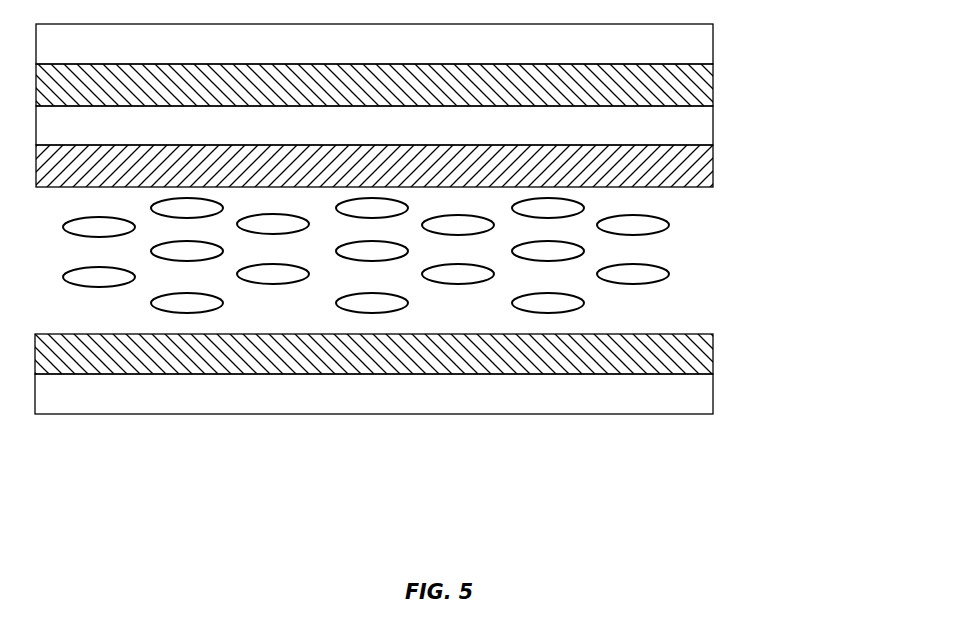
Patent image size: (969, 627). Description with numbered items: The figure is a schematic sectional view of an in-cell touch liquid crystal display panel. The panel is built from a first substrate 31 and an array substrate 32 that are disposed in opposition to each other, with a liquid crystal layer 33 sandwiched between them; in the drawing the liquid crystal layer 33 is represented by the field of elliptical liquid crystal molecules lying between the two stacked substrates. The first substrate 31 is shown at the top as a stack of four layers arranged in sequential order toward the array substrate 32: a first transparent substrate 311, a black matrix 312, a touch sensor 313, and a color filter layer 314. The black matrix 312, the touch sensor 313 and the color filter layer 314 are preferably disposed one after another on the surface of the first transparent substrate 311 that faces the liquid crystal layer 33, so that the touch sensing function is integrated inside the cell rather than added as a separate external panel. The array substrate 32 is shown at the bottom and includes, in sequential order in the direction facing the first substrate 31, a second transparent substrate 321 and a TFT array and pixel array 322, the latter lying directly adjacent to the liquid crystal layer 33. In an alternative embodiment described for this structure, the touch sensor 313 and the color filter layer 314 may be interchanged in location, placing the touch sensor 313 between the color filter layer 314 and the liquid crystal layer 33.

The first substrate 31 is at (450, 105).
The first transparent substrate 311 is at (695, 43).
The black matrix 312 is at (695, 80).
The touch sensor 313 is at (695, 125).
The color filter layer 314 is at (412, 166).
The liquid crystal layer 33 is at (708, 198).
The array substrate 32 is at (452, 374).
The TFT array and pixel array 322 is at (695, 355).
The second transparent substrate 321 is at (695, 392).